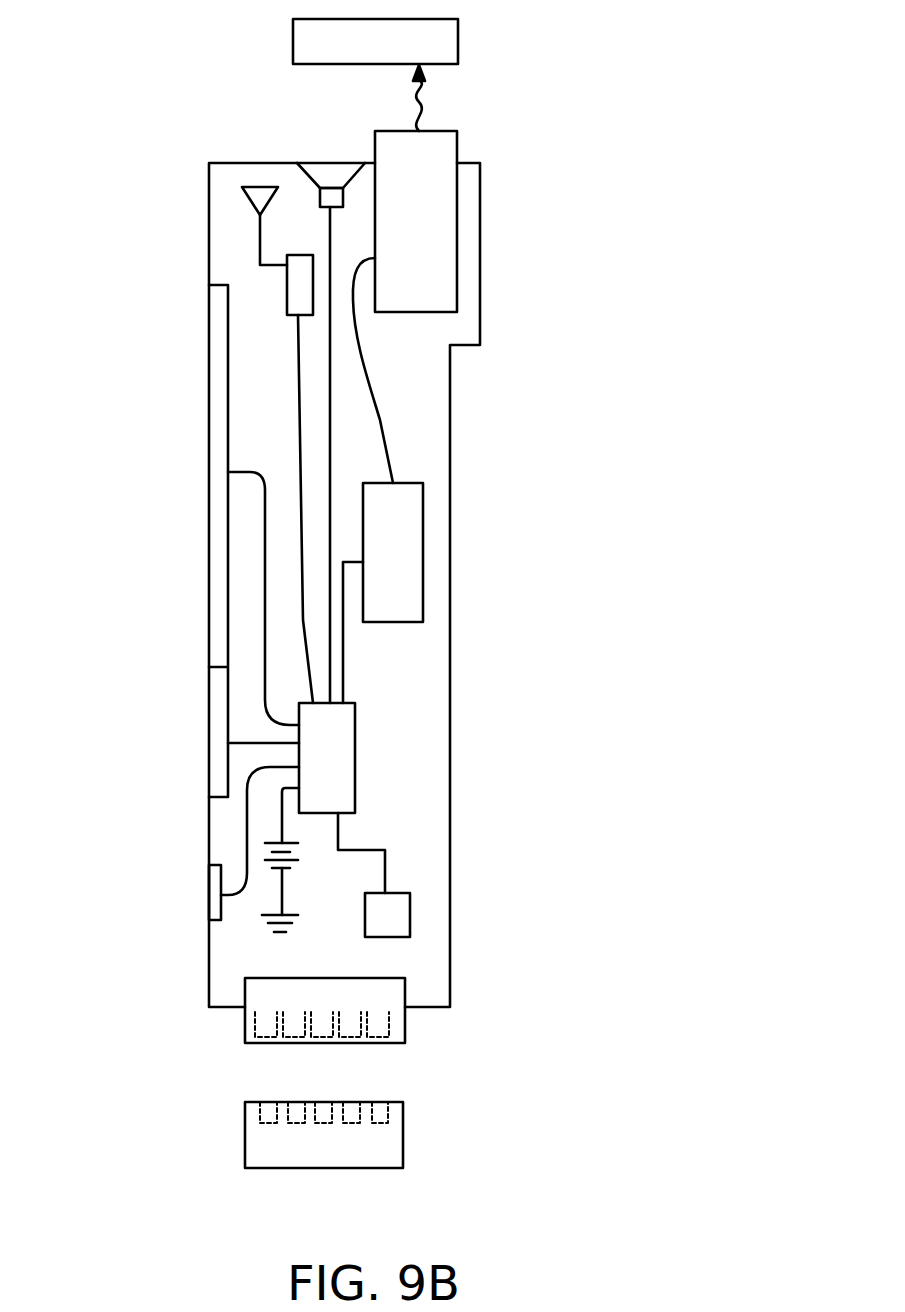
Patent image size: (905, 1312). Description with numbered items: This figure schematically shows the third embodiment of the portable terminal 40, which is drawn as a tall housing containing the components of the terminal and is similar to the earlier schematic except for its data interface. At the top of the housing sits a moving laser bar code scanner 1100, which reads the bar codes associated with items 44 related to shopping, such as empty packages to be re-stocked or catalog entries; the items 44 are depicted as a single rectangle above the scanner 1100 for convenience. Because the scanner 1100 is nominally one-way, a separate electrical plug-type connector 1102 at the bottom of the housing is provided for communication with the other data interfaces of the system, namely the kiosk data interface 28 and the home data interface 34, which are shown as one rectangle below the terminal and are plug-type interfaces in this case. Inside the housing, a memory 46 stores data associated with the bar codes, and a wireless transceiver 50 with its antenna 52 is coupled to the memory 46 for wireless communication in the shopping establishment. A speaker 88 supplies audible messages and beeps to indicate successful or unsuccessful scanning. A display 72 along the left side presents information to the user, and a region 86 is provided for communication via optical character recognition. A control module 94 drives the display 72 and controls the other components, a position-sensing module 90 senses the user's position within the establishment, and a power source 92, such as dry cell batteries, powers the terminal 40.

The portable terminal 40 is at (450, 410).
The items 44 is at (458, 37).
The moving laser bar code scanner 1100 is at (457, 240).
The speaker 88 is at (323, 171).
The antenna 52 is at (242, 197).
The wireless transceiver 50 is at (287, 281).
The display 72 is at (215, 510).
The memory 46 is at (410, 560).
The control module 94 is at (342, 770).
The region 86 is at (213, 743).
The power source 92 is at (268, 853).
The position-sensing module 90 is at (395, 920).
The electrical plug-type connector 1102 is at (405, 993).
The kiosk data interface 28 is at (412, 1135).
The home data interface 34 is at (403, 1137).